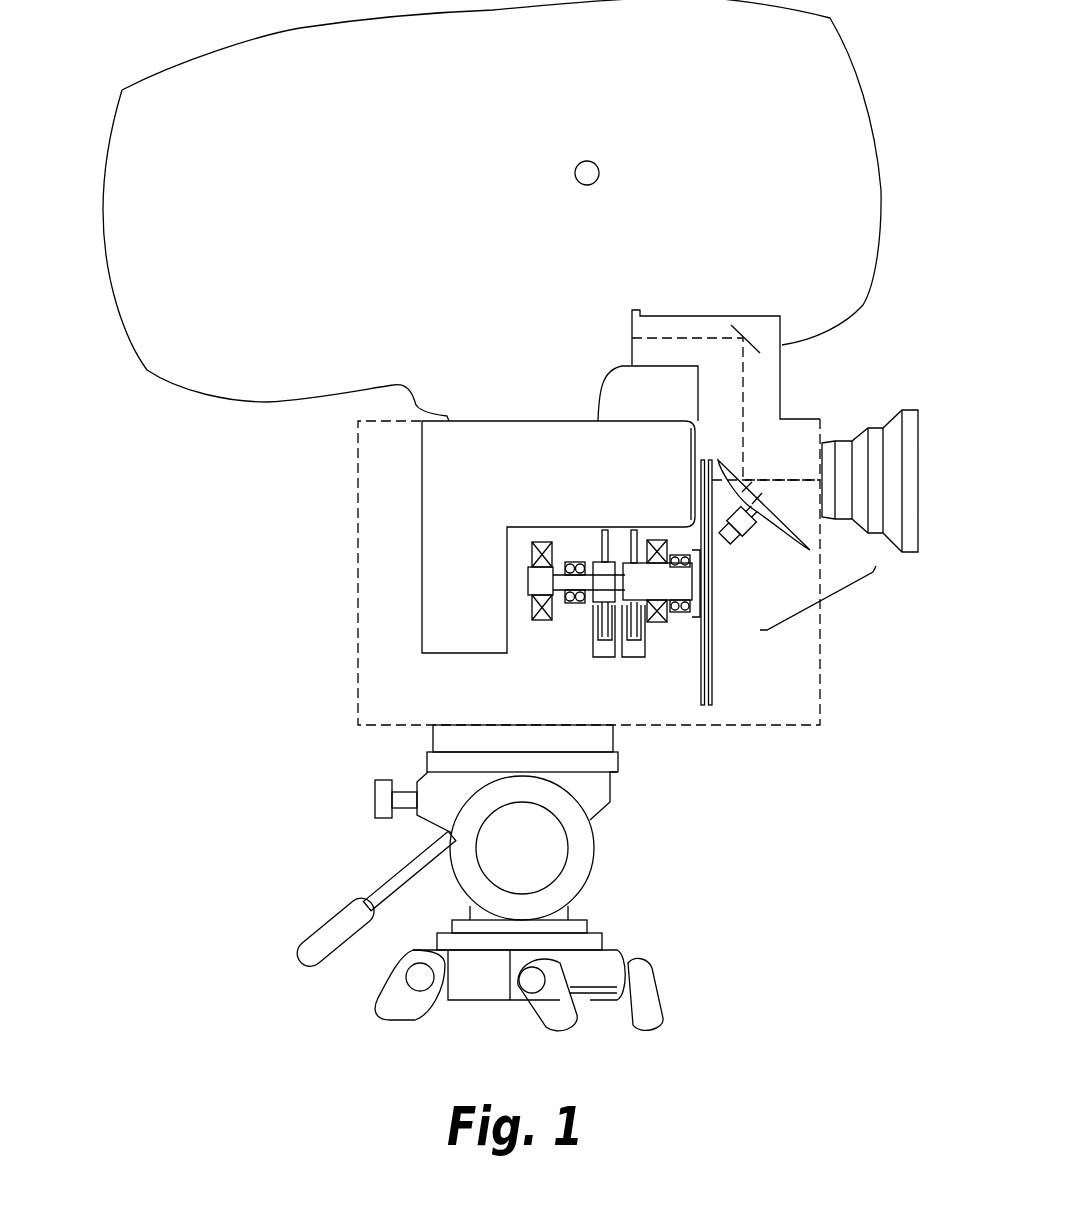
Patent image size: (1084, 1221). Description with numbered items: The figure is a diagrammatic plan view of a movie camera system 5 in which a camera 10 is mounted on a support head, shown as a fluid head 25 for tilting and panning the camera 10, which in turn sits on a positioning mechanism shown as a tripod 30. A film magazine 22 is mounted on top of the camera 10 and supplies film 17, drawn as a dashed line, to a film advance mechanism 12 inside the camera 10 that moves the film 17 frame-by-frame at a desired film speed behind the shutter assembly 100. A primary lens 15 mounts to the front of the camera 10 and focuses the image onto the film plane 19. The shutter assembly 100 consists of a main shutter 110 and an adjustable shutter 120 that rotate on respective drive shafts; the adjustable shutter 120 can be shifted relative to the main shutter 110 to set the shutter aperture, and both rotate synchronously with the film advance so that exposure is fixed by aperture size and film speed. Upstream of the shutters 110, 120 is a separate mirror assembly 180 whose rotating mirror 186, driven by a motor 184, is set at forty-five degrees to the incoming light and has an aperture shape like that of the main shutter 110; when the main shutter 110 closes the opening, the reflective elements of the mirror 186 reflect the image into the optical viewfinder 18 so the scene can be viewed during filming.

The movie camera system 5 is at (130, 419).
The film magazine 22 is at (847, 42).
The optical viewfinder 18 is at (720, 320).
The film 17 is at (690, 427).
The film plane 19 is at (693, 462).
The camera 10 is at (352, 583).
The film advance mechanism 12 is at (473, 553).
The adjustable shutter 120 is at (698, 660).
The main shutter 110 is at (712, 622).
The shutter assembly 100 is at (727, 700).
The motor 184 is at (750, 528).
The rotating mirror 186 is at (785, 528).
The mirror assembly 180 is at (818, 598).
The primary lens 15 is at (892, 543).
The fluid head 25 is at (610, 786).
The tripod 30 is at (590, 935).